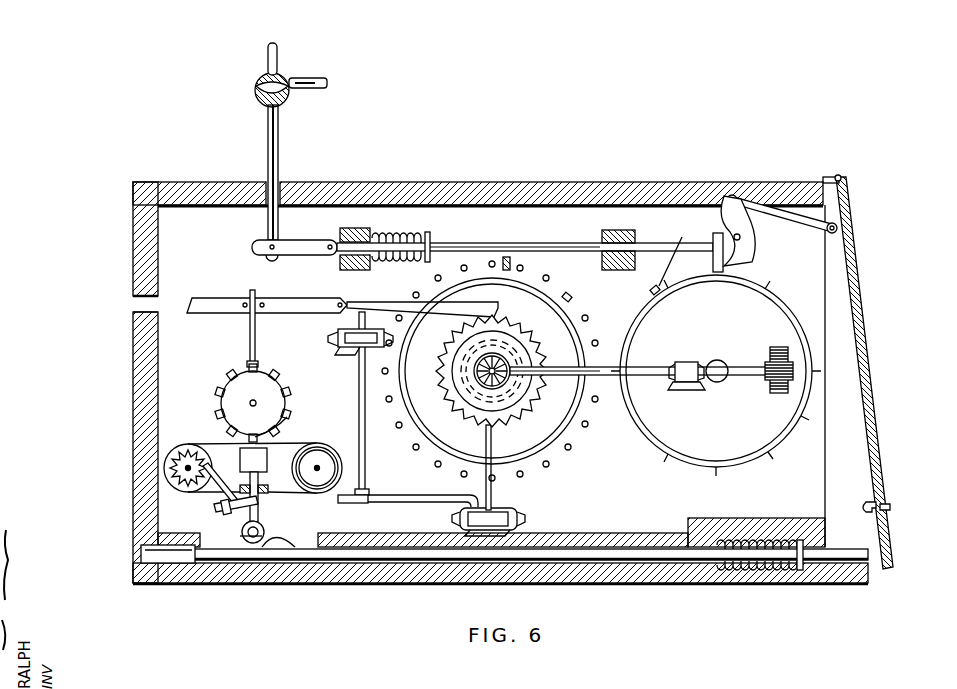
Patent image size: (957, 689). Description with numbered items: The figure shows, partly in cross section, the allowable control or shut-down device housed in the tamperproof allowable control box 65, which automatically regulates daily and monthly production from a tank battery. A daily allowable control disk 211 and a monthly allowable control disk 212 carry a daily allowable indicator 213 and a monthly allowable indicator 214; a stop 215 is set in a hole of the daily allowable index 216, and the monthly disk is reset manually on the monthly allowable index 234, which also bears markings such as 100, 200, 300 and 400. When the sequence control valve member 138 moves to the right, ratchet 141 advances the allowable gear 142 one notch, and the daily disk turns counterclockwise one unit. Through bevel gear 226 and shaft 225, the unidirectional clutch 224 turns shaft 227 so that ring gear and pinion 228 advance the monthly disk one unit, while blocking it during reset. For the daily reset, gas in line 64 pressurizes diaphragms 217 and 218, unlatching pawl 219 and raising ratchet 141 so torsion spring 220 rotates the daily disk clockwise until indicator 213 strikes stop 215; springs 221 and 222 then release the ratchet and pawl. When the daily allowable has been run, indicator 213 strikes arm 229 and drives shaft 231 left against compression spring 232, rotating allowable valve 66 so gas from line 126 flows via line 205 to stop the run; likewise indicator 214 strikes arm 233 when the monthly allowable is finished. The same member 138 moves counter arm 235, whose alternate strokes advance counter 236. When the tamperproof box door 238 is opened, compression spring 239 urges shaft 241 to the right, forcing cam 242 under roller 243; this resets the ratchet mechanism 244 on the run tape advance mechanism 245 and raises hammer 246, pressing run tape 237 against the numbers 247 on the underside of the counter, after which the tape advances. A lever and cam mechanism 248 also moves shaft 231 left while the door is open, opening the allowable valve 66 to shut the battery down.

The line 64 is at (360, 505).
The allowable control box 65 is at (540, 183).
The allowable valve 66 is at (257, 85).
The dial marking 100 is at (836, 372).
The line 126 is at (279, 52).
The sequence control valve member 138 is at (300, 297).
The ratchet 141 is at (455, 305).
The allowable gear 142 is at (492, 371).
The dial marking 200 is at (718, 482).
The line 205 is at (312, 79).
The daily allowable control disk 211 is at (560, 455).
The monthly allowable control disk 212 is at (690, 466).
The daily allowable indicator 213 is at (569, 295).
The monthly allowable indicator 214 is at (686, 250).
The stop 215 is at (593, 340).
The daily allowable index 216 is at (597, 308).
The diaphragm 217 is at (505, 510).
The diaphragm 218 is at (343, 349).
The pawl 219 is at (492, 443).
The torsion spring 220 is at (478, 379).
The spring 221 is at (340, 335).
The spring 222 is at (460, 522).
The unidirectional clutch 224 is at (700, 392).
The shaft 225 is at (648, 362).
The bevel gear 226 is at (502, 382).
The shaft 227 is at (738, 381).
The ring gear and pinion 228 is at (790, 358).
The arm 229 is at (512, 262).
The shaft 231 is at (460, 246).
The compression spring 232 is at (405, 233).
The arm 233 is at (726, 268).
The monthly allowable index 234 is at (806, 322).
The counter arm 235 is at (250, 338).
The counter 236 is at (235, 385).
The run tape 237 is at (298, 446).
The tamperproof box door 238 is at (886, 482).
The compression spring 239 is at (770, 566).
The shaft 241 is at (543, 562).
The cam 242 is at (275, 545).
The roller 243 is at (237, 535).
The ratchet mechanism 244 is at (220, 507).
The run tape advance mechanism 245 is at (176, 470).
The hammer 246 is at (266, 472).
The numbers 247 is at (280, 428).
The lever and cam mechanism 248 is at (748, 195).
The dial marking 300 is at (608, 353).
The dial marking 400 is at (701, 254).